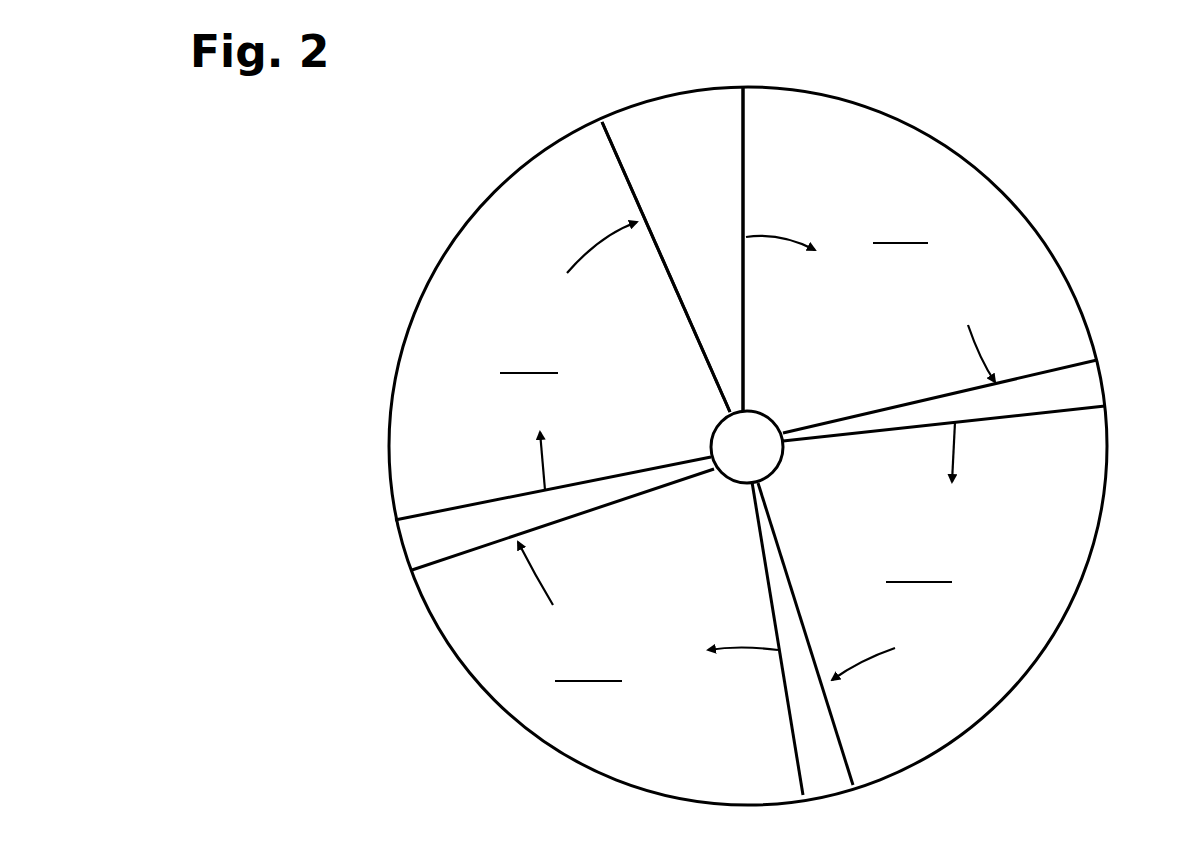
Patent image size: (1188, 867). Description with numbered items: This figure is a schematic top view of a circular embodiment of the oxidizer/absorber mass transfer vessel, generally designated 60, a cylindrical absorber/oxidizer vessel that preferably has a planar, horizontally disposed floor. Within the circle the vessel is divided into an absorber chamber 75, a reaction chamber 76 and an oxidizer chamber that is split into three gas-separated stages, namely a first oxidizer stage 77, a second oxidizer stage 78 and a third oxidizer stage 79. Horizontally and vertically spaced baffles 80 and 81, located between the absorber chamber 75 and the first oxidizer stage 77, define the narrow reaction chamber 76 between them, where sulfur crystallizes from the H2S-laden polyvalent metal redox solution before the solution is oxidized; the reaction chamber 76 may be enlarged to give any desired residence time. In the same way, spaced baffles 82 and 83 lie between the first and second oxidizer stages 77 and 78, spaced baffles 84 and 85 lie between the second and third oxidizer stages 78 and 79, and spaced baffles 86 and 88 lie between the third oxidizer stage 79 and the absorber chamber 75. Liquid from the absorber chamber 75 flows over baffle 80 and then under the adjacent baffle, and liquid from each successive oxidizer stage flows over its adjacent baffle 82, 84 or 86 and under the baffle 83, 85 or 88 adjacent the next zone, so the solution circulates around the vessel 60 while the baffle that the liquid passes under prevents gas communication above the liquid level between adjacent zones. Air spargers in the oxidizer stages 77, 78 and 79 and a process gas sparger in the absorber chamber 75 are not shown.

The circular process and apparatus 60 is at (1086, 226).
The absorber chamber 75 is at (437, 306).
The reaction chamber 76 is at (650, 116).
The first oxidizer stage 77 is at (950, 168).
The second oxidizer stage 78 is at (1070, 565).
The third oxidizer stage 79 is at (572, 745).
The baffle 80 is at (612, 152).
The baffle 81 is at (748, 138).
The baffle 82 is at (1068, 357).
The baffle 83 is at (1083, 408).
The baffle 84 is at (870, 760).
The baffle 85 is at (812, 780).
The baffle 86 is at (425, 585).
The baffle 88 is at (415, 512).